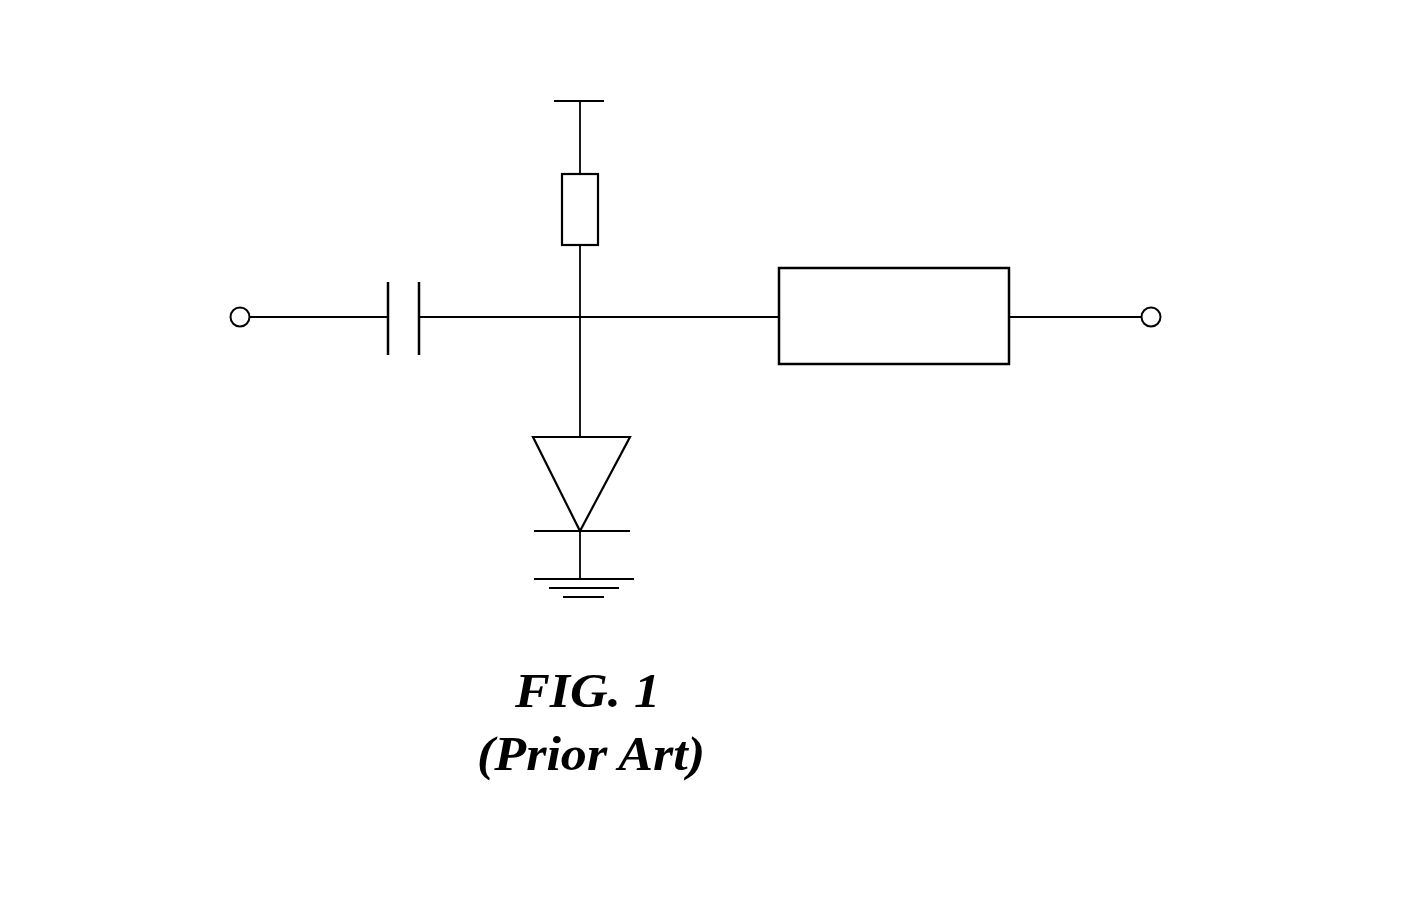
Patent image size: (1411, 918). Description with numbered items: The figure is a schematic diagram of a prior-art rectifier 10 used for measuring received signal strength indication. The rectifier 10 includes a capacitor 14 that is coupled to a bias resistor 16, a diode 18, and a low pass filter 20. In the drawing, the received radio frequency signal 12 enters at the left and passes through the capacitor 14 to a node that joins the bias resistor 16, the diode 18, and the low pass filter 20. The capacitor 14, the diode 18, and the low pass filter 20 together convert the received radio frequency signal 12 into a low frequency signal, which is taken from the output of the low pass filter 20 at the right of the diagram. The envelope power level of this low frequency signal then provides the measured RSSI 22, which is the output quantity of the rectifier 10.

The rectifier 10 is at (1041, 99).
The received radio frequency signal 12 is at (146, 416).
The capacitor 14 is at (419, 298).
The bias resistor 16 is at (598, 188).
The diode 18 is at (613, 437).
The low pass filter 20 is at (971, 267).
The measured RSSI 22 is at (1298, 393).